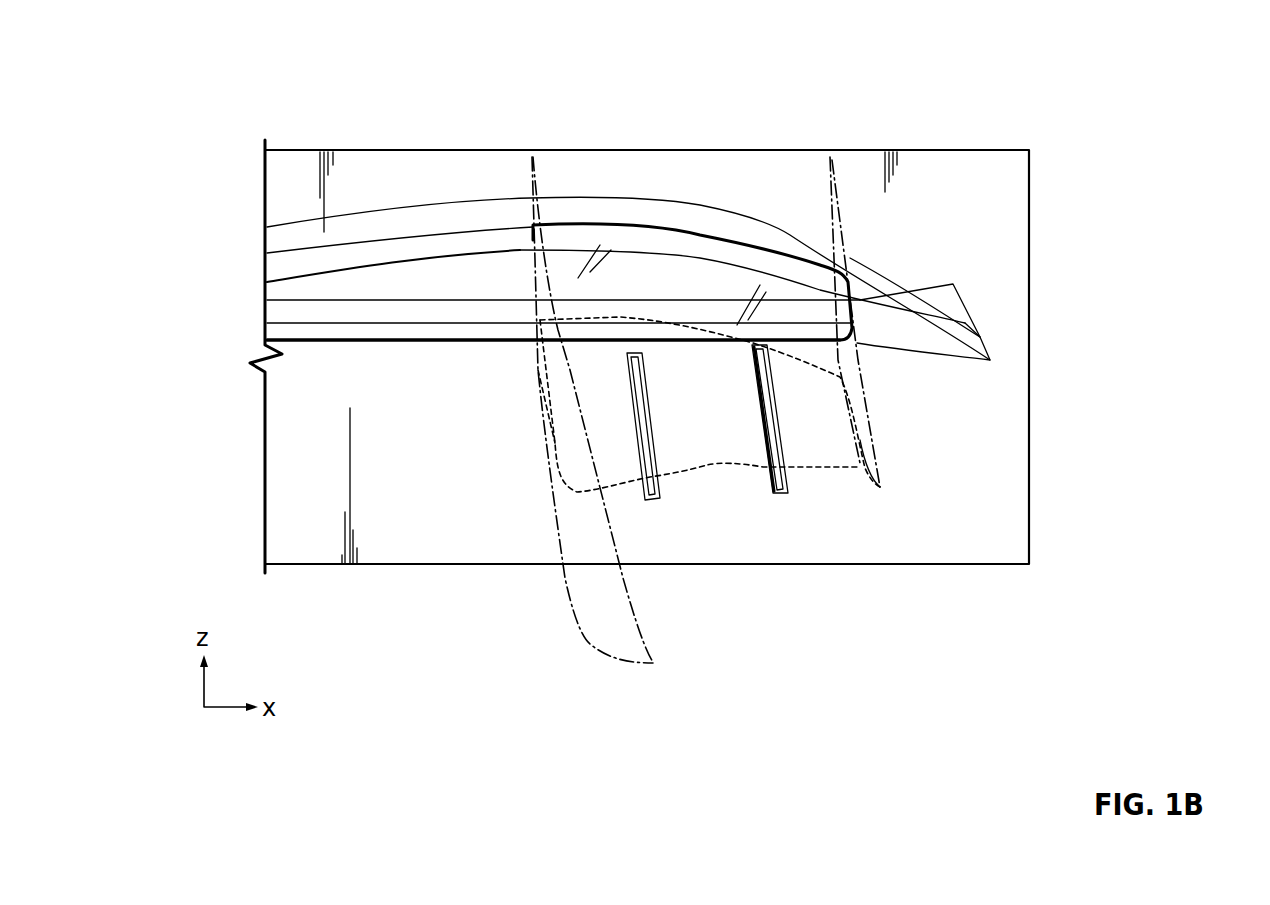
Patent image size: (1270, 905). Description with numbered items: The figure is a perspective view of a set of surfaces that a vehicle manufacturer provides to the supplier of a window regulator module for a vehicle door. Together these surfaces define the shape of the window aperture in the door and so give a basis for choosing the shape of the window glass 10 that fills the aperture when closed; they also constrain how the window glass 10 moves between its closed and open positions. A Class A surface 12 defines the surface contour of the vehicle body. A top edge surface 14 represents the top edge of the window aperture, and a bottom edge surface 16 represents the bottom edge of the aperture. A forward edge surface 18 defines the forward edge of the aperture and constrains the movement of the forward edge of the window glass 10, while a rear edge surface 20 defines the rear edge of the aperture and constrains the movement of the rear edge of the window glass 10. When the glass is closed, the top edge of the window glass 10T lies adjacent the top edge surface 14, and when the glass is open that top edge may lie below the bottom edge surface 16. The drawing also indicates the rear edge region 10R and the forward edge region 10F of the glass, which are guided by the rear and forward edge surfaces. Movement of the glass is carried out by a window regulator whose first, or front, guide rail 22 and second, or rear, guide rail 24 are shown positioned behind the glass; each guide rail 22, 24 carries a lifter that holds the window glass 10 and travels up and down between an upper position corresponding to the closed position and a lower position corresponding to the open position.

The window glass 10 is at (736, 270).
The top edge of the window glass 10T is at (586, 228).
The blade root 10R is at (558, 447).
The blade front / leading edge 10F is at (880, 487).
The Class A surface 12 is at (953, 192).
The top edge surface 14 is at (462, 232).
The bottom edge surface 16 is at (450, 345).
The forward edge surface 18 is at (845, 242).
The rear edge surface 20 is at (571, 578).
The first guide rail 22 is at (787, 483).
The second guide rail 24 is at (648, 452).